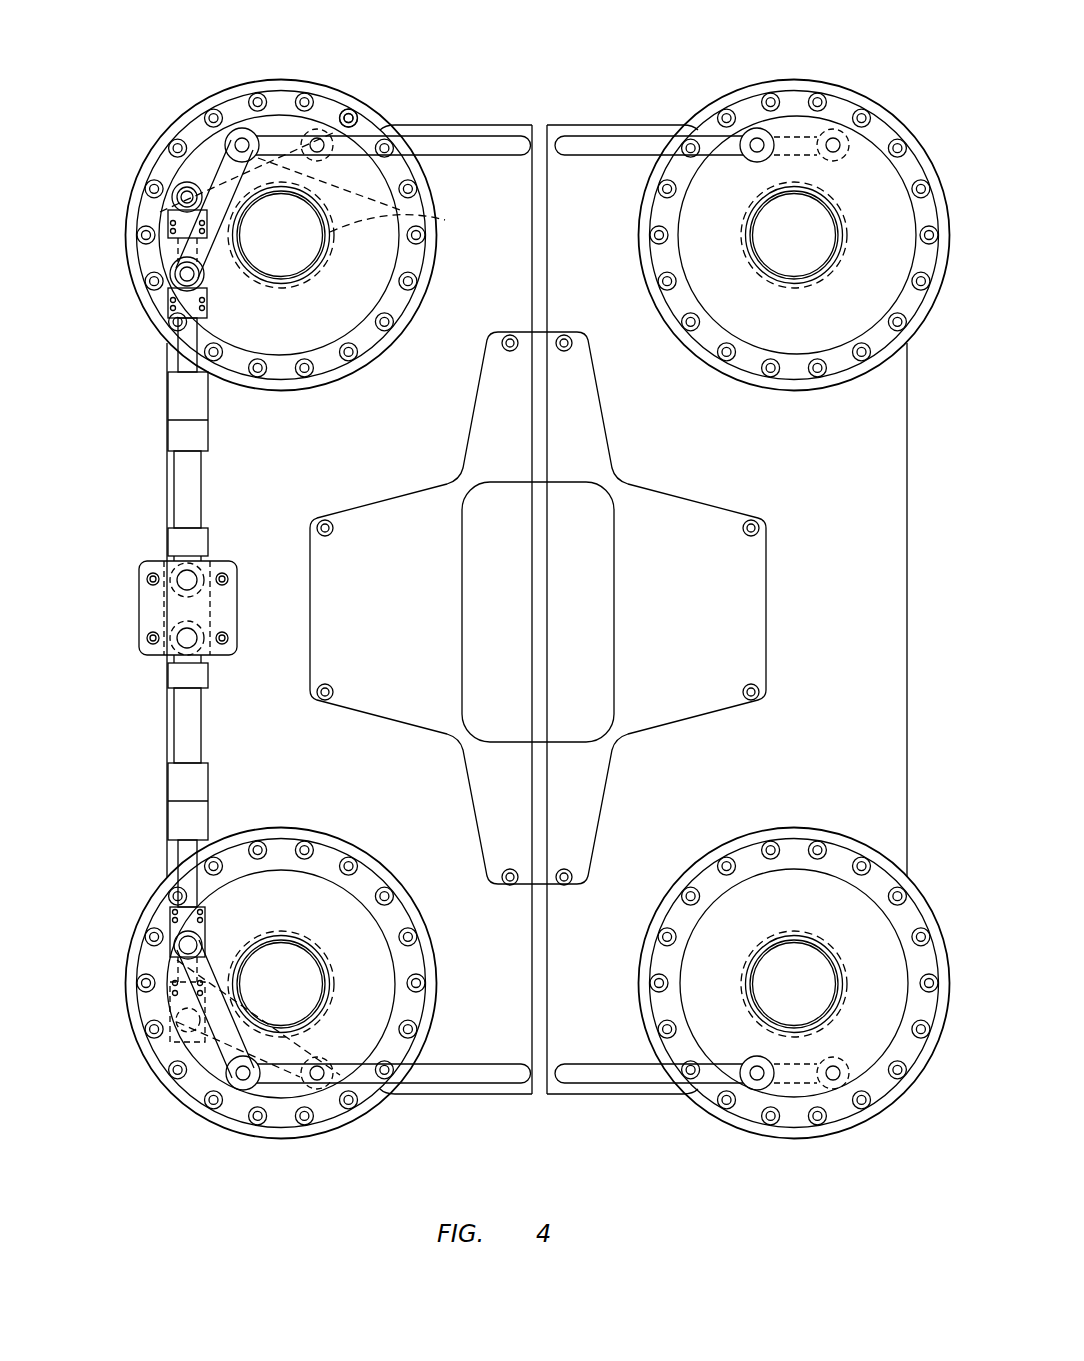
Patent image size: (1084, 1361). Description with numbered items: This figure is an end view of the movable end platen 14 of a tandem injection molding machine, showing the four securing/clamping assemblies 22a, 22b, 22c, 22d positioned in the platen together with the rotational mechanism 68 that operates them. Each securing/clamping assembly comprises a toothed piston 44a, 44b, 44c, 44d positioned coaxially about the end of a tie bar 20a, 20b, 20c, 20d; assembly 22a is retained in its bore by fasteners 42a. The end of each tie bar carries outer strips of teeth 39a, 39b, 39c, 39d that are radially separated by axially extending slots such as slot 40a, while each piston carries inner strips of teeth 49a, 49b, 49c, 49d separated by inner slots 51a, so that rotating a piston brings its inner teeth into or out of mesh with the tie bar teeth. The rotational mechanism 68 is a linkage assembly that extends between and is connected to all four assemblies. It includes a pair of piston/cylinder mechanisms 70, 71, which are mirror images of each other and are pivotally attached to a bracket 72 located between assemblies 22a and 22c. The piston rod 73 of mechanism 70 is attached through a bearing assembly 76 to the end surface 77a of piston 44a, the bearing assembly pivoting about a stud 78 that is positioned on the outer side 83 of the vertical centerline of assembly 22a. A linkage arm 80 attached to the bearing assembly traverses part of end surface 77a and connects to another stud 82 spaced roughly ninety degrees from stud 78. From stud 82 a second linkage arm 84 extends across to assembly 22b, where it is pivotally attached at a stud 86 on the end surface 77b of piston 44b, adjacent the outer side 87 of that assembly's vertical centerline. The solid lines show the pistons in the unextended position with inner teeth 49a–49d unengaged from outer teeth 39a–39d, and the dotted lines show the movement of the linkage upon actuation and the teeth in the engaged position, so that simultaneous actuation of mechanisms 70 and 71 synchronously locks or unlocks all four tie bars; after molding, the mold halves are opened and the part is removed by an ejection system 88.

The movable end platen 14 is at (920, 715).
The tie bar 20a is at (300, 263).
The tie bar 20b is at (815, 260).
The tie bar 20c is at (262, 958).
The tie bar 20d is at (768, 965).
The securing/clamping assembly 22a is at (330, 386).
The securing/clamping assembly 22b is at (700, 346).
The securing/clamping assembly 22c is at (340, 840).
The securing/clamping assembly 22d is at (745, 845).
The outer strips of teeth 39a is at (325, 200).
The outer strips of teeth 39b is at (835, 210).
The outer strips of teeth 39c is at (315, 950).
The outer strips of teeth 39d is at (830, 955).
The outer axially extending slot 40a is at (400, 213).
The fasteners 42a is at (352, 114).
The piston 44a is at (375, 300).
The piston 44b is at (745, 330).
The piston 44c is at (380, 966).
The piston 44d is at (700, 960).
The inner strips of teeth 49a is at (322, 252).
The inner strips of teeth 49b is at (845, 250).
The inner strips of teeth 49c is at (330, 995).
The inner strips of teeth 49d is at (843, 990).
The inner slots 51a is at (333, 180).
The rotational mechanism 68 is at (157, 767).
The piston/cylinder mechanism 70 is at (198, 500).
The piston/cylinder mechanism 71 is at (200, 722).
The bracket 72 is at (237, 586).
The piston rod 73 is at (186, 348).
The bearing assembly 76 is at (168, 213).
The end surface of piston 77a is at (405, 255).
The end surface of piston 77b is at (835, 330).
The stud 78 is at (180, 188).
The linkage arm 80 is at (218, 160).
The stud 82 is at (242, 128).
The outer side of vertical centerline 83 is at (147, 90).
The second linkage arm 84 is at (455, 155).
The stud 86 is at (757, 138).
The outer side of vertical centerline 87 is at (720, 72).
The ejection system 88 is at (600, 815).